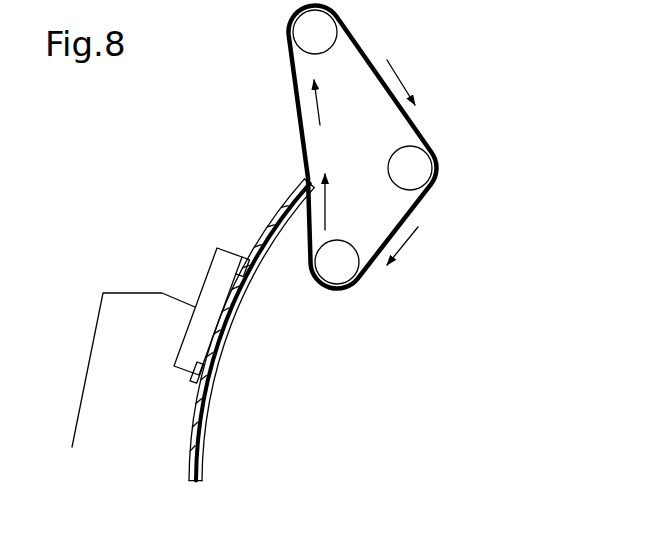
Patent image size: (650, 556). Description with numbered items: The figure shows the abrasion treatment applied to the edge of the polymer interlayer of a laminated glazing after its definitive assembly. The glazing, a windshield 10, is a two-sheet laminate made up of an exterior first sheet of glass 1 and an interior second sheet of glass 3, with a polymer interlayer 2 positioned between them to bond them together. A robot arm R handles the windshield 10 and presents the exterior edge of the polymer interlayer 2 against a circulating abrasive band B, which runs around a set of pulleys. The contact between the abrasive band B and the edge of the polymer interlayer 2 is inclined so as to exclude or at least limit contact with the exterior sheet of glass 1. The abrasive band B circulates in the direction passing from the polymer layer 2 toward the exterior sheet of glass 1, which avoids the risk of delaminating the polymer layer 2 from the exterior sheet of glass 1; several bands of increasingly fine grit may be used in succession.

The abrasive band B is at (290, 103).
The robot arm R is at (130, 292).
The first sheet of glass 1 is at (265, 213).
The polymer interlayer 2 is at (287, 208).
The second sheet of glass 3 is at (258, 299).
The windshield 10 is at (247, 306).